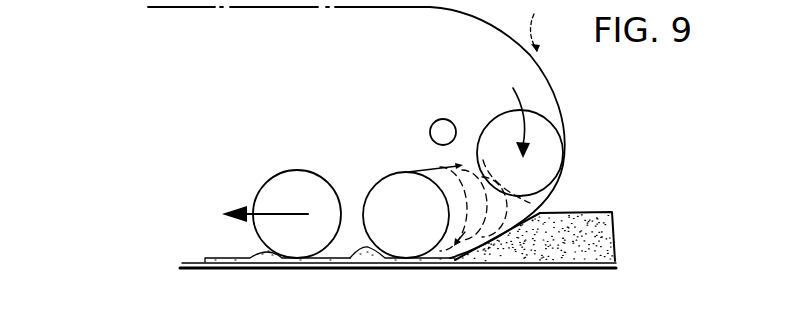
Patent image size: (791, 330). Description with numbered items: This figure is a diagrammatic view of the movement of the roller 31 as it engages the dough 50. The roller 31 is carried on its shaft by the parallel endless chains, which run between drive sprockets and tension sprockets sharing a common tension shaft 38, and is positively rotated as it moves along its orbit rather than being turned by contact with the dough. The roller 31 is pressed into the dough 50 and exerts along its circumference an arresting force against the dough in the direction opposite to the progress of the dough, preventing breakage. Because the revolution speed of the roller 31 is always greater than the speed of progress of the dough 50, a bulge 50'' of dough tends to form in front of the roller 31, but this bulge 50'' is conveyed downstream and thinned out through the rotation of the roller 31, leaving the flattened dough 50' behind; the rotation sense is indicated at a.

The roller 31 is at (549, 122).
The tension shaft 38 is at (444, 129).
The dough 50 is at (535, 207).
The flattened dough 50' is at (260, 243).
The bulge of dough 50'' is at (402, 275).
The direction of rotation a is at (543, 29).